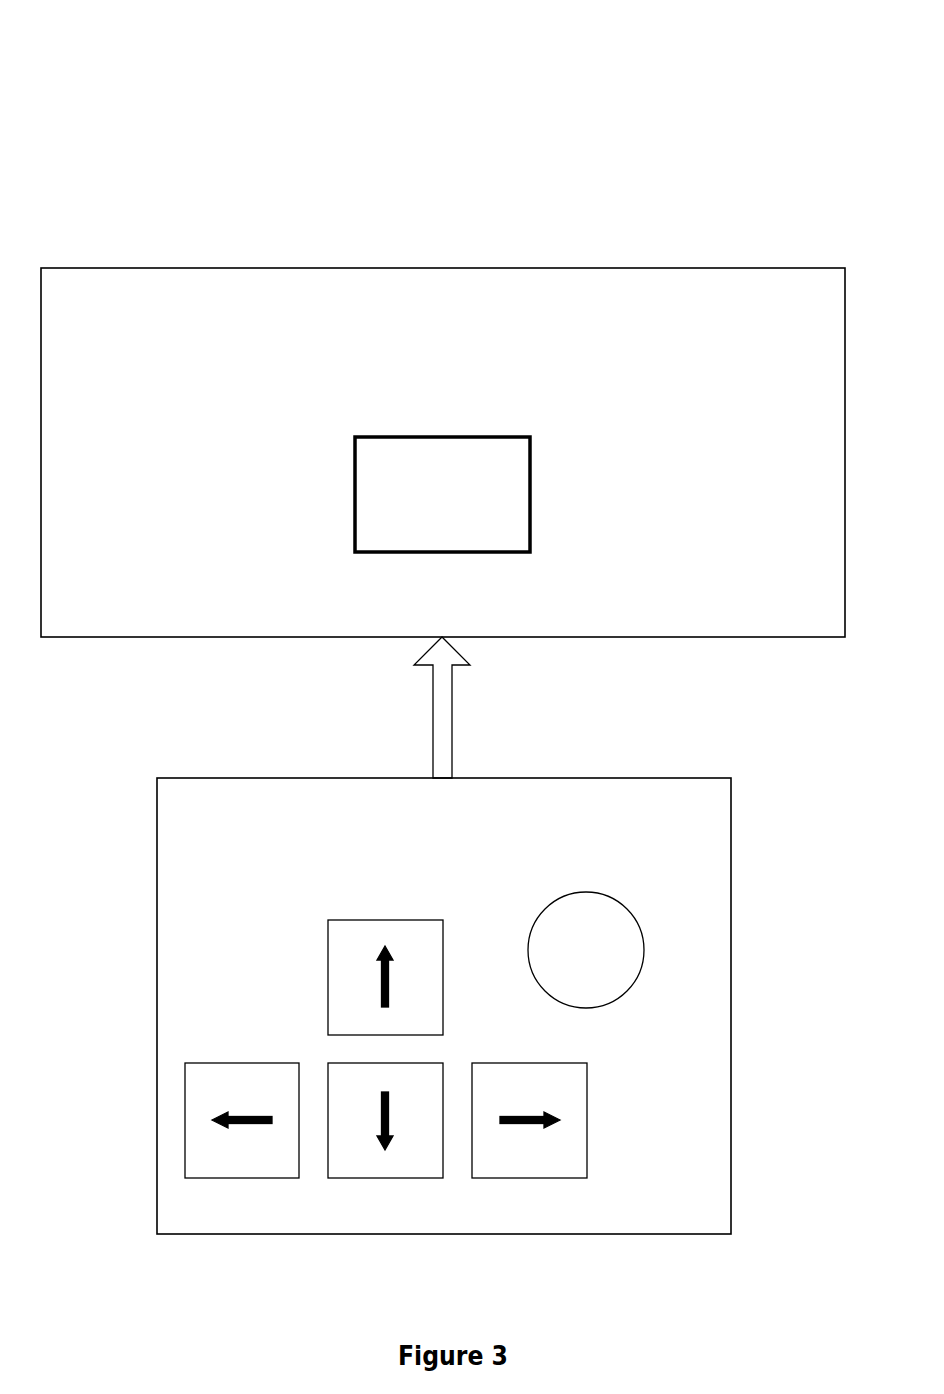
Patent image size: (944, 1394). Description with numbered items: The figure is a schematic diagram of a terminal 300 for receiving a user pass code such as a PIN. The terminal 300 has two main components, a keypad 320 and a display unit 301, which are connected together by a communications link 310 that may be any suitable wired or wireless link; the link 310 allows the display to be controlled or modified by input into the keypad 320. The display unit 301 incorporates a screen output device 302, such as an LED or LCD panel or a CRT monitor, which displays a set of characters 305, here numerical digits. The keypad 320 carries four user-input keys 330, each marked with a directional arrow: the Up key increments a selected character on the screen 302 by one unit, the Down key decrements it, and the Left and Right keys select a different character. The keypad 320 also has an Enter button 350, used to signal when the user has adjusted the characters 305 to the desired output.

The terminal 300 is at (698, 103).
The display unit 301 is at (443, 452).
The screen output device 302 is at (507, 457).
The characters 305 is at (341, 472).
The communications link 310 is at (516, 707).
The keypad 320 is at (444, 1006).
The user-input keys 330 is at (386, 1029).
The Enter button 350 is at (586, 950).